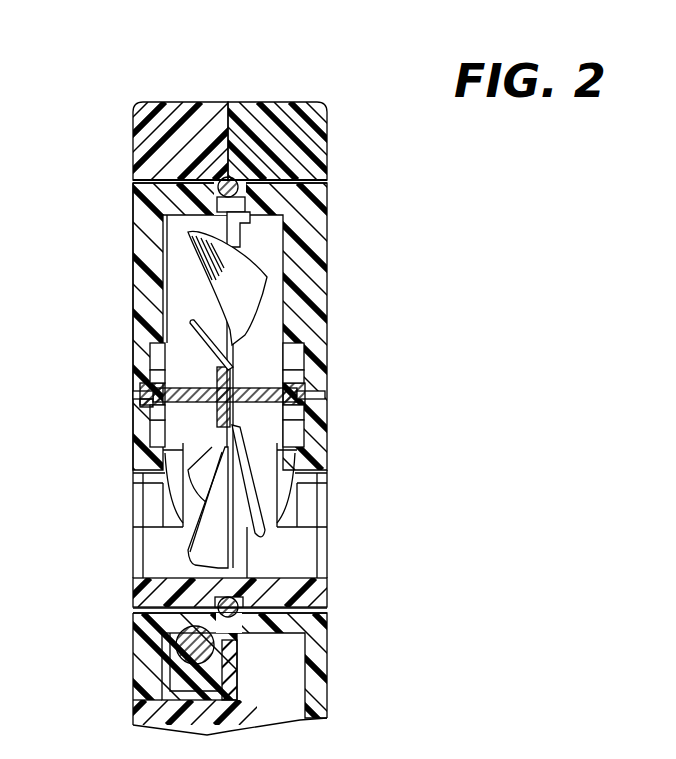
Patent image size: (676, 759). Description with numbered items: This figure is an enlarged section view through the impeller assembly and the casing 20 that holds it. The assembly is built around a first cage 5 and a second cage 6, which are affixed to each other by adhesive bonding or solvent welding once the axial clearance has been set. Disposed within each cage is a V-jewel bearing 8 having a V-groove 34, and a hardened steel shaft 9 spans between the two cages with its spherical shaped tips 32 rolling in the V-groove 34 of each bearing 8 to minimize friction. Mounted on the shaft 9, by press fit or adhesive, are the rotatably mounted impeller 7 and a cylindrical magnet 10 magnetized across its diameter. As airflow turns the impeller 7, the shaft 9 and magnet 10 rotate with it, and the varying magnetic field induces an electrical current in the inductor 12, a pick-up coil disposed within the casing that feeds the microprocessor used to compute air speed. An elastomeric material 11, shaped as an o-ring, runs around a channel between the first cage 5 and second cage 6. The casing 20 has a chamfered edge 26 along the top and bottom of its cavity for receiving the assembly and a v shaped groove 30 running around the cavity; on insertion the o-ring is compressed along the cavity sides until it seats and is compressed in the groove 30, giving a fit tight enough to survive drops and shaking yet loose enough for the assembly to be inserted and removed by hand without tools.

The first cage 5 is at (318, 232).
The second cage 6 is at (133, 258).
The impeller 7 is at (255, 288).
The V-jewel bearings 8 is at (145, 390).
The shaft 9 is at (290, 440).
The magnet 10 is at (210, 418).
The elastomeric material 11 is at (267, 604).
The inductor 12 is at (162, 678).
The casing 20 is at (235, 103).
The chamfered edge 26 is at (135, 180).
The v shaped groove 30 is at (233, 176).
The spherical shaped tips 32 is at (135, 363).
The V-groove 34 is at (150, 403).